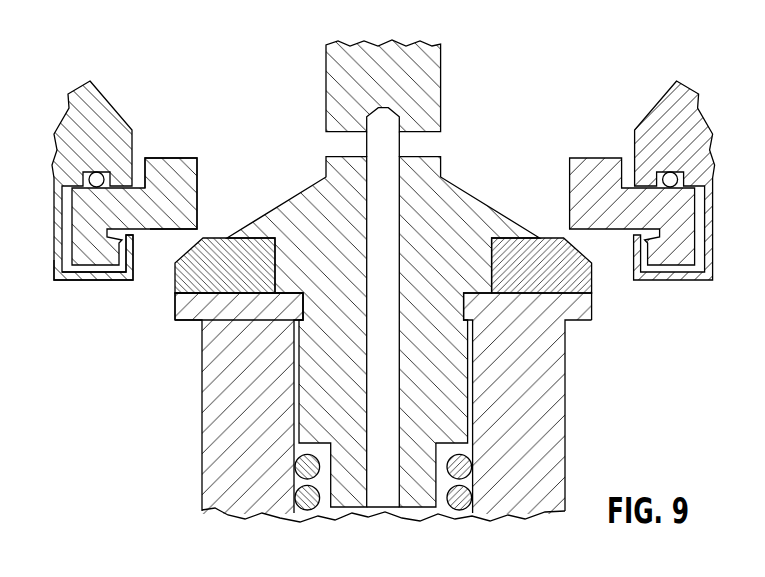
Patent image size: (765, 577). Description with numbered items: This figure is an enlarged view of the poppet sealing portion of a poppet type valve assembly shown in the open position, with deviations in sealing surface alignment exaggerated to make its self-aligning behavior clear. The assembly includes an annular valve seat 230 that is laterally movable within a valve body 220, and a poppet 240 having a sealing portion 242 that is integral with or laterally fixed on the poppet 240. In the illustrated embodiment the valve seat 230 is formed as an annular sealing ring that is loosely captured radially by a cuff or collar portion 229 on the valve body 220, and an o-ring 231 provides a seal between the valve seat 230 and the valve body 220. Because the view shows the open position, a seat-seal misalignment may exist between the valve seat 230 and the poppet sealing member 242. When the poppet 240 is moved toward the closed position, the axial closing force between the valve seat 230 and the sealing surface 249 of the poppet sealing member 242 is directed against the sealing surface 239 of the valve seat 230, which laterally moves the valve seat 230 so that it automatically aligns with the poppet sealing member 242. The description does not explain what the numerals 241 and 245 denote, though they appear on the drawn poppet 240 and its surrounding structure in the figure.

The valve body 220 is at (95, 110).
The cuff or collar portion 229 is at (75, 277).
The valve seat 230 is at (155, 212).
The o-ring 231 is at (97, 172).
The sealing surface of the valve seat 239 is at (197, 229).
The poppet 240 is at (379, 281).
The shaft 241 is at (427, 73).
The sealing portion 242 is at (227, 325).
The body 245 is at (535, 424).
The sealing surface of the poppet sealing member 249 is at (190, 248).